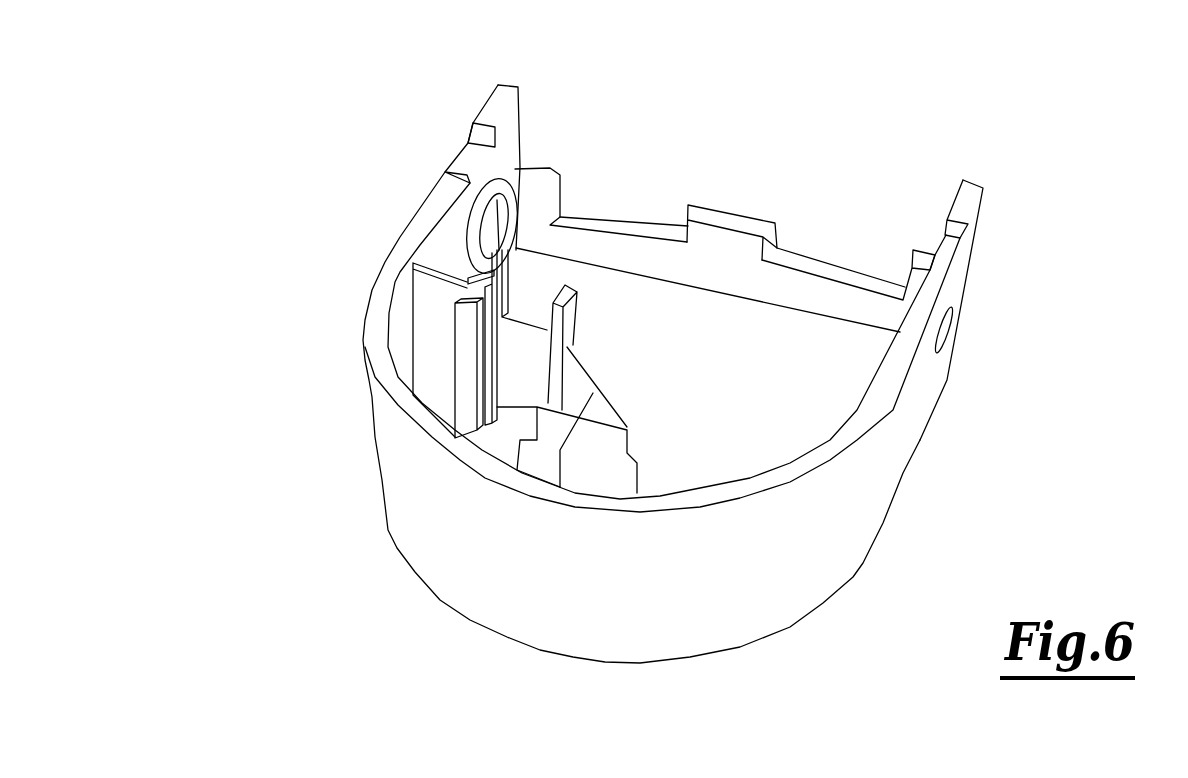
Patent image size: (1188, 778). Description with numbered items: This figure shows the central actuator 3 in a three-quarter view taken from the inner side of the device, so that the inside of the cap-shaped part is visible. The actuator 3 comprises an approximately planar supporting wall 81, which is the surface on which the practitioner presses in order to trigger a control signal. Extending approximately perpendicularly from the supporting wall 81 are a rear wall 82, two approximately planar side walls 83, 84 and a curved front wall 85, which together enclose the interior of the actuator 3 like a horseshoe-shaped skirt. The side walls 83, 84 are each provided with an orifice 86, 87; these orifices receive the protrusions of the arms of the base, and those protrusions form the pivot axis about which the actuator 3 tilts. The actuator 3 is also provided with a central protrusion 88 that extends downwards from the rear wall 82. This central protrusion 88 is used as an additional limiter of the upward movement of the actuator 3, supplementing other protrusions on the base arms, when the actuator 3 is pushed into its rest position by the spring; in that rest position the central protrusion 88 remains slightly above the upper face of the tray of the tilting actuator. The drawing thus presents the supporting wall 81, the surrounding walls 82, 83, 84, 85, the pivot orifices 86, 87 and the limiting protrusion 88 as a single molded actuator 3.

The actuator 3 is at (318, 358).
The supporting wall 81 is at (768, 340).
The rear wall 82 is at (617, 247).
The side wall 83 is at (413, 230).
The side wall 84 is at (910, 407).
The front wall 85 is at (553, 593).
The orifice 86 is at (497, 183).
The orifice 87 is at (948, 332).
The central protrusion 88 is at (732, 220).